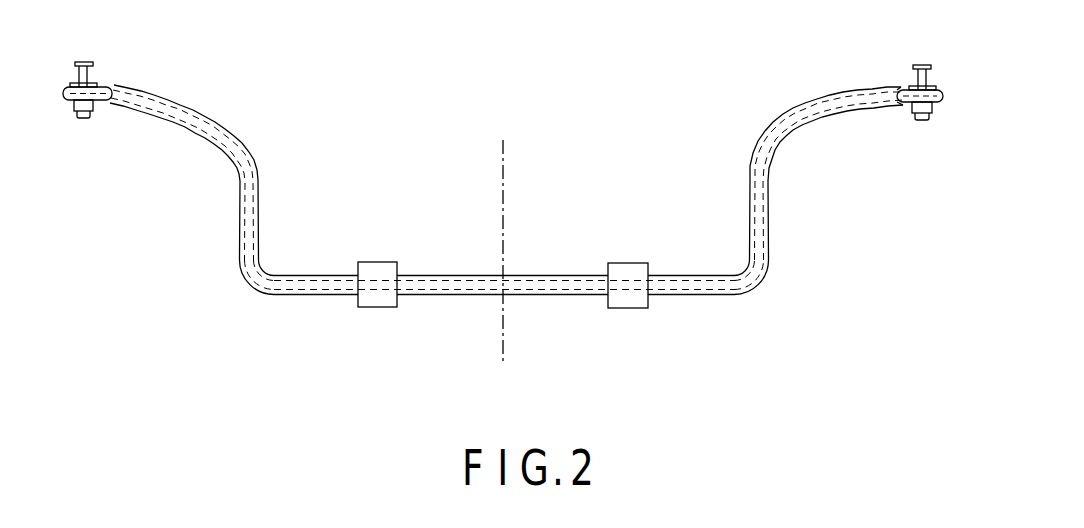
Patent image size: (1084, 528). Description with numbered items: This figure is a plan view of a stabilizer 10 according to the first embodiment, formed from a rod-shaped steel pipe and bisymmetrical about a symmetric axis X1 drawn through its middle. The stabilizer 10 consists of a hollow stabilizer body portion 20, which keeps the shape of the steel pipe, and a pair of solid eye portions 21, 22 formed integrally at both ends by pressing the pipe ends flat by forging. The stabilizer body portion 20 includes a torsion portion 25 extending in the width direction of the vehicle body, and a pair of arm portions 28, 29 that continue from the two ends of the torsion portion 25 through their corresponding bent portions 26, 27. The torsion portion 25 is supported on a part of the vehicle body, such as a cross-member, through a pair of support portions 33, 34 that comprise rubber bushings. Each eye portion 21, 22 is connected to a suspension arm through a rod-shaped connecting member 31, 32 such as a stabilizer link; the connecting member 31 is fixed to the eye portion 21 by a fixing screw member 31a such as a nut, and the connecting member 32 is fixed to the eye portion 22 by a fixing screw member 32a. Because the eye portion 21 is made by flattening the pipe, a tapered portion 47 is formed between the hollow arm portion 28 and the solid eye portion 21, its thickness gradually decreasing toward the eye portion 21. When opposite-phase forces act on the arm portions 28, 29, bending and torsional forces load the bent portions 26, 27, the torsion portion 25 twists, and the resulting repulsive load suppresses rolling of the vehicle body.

The stabilizer 10 is at (437, 346).
The stabilizer body portion 20 is at (780, 237).
The eye portion 21 is at (940, 105).
The eye portion 22 is at (70, 101).
The torsion portion 25 is at (548, 296).
The bent portion 26 is at (767, 278).
The bent portion 27 is at (244, 277).
The arm portion 28 is at (801, 106).
The arm portion 29 is at (215, 121).
The connecting member 31 is at (912, 70).
The fixing screw member 31a is at (908, 112).
The connecting member 32 is at (91, 72).
The fixing screw member 32a is at (98, 109).
The support portion 33 is at (628, 263).
The support portion 34 is at (375, 262).
The tapered portion 47 is at (899, 88).
The symmetric axis X1 is at (506, 160).